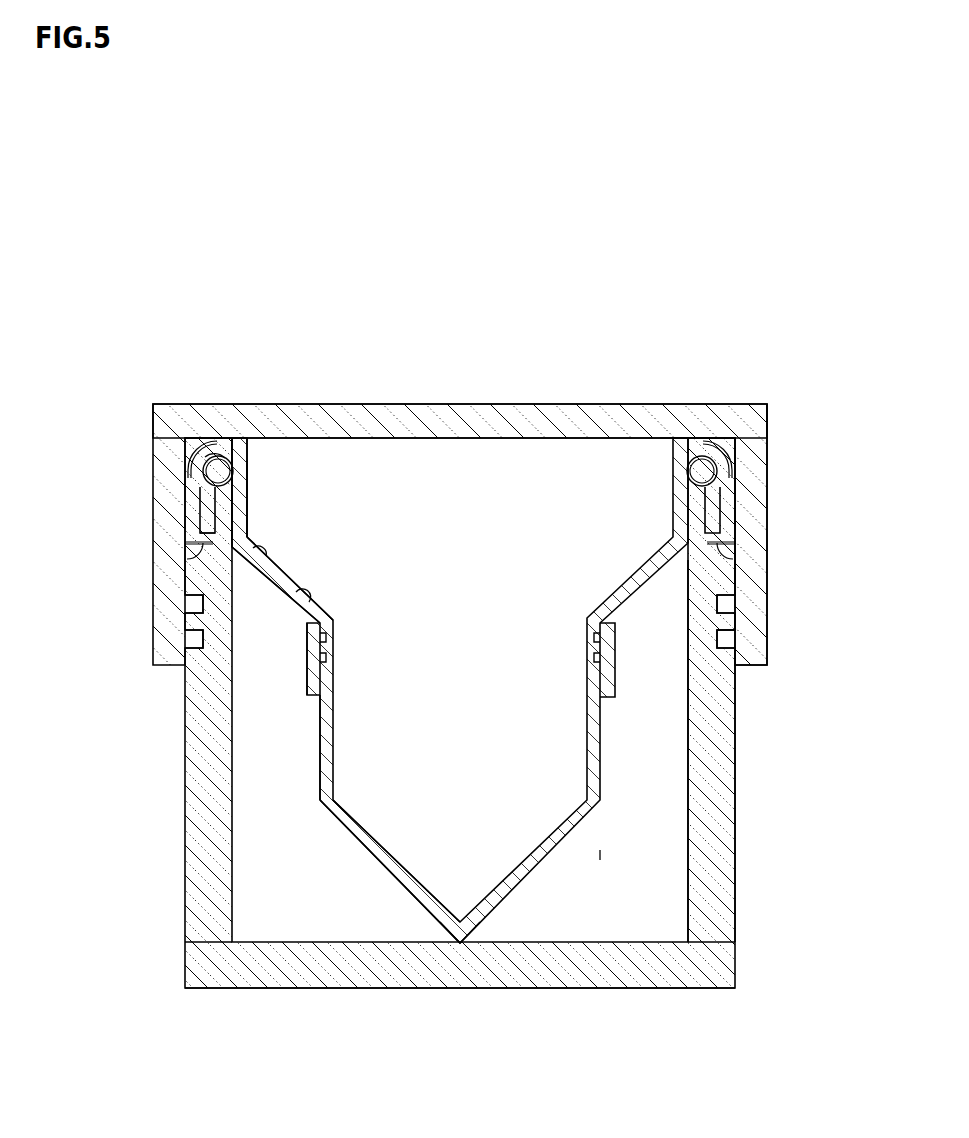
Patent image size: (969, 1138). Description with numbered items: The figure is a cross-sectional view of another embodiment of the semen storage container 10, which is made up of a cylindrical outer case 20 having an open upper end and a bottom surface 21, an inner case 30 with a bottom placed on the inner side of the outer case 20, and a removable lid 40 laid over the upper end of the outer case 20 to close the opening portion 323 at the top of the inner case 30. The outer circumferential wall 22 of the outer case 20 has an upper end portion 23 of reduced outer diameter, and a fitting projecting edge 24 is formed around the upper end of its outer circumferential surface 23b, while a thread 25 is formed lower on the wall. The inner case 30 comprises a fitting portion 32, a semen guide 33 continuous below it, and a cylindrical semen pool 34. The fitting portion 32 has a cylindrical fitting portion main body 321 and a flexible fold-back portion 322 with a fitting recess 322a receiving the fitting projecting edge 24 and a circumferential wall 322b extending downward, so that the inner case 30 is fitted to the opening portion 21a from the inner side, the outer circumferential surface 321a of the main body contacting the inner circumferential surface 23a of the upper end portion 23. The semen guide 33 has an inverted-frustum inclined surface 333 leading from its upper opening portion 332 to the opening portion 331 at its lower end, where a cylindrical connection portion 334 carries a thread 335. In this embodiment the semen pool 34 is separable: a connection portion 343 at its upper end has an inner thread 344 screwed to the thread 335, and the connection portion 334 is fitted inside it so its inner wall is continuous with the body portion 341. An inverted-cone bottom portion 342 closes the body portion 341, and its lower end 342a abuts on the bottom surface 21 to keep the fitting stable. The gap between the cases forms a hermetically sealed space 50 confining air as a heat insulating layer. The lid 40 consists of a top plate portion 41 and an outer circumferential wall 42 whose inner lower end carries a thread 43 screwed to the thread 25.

The semen storage container 10 is at (792, 346).
The outer case 20 is at (735, 822).
The bottom surface 21 is at (620, 943).
The opening portion 21a is at (683, 452).
The outer circumferential wall 22 is at (735, 762).
The upper end portion 23 is at (714, 505).
The inner circumferential surface 23a is at (192, 450).
The outer circumferential surface 23b is at (196, 545).
The fitting projecting edge 24 is at (714, 468).
The thread 25 is at (726, 622).
The inner case 30 is at (508, 892).
The fitting portion 32 is at (205, 470).
The fitting portion main body 321 is at (237, 438).
The outer circumferential surface 321a is at (250, 507).
The fold-back portion 322 is at (200, 510).
The fitting recess 322a is at (213, 440).
The circumferential wall 322b is at (207, 525).
The opening portion 323 is at (673, 440).
The semen guide 33 is at (277, 593).
The opening portion 331 is at (334, 620).
The opening portion 332 is at (258, 568).
The inclined surface 333 is at (297, 606).
The connection portion 334 is at (327, 637).
The thread 335 is at (327, 657).
The semen pool 34 is at (320, 762).
The body portion 341 is at (321, 792).
The bottom portion 342 is at (368, 862).
The lower end 342a is at (458, 941).
The connection portion 343 is at (307, 652).
The thread 344 is at (319, 733).
The lid 40 is at (438, 404).
The top plate portion 41 is at (548, 404).
The outer circumferential wall 42 is at (767, 560).
The thread 43 is at (724, 640).
The hermetically sealed space 50 is at (637, 858).